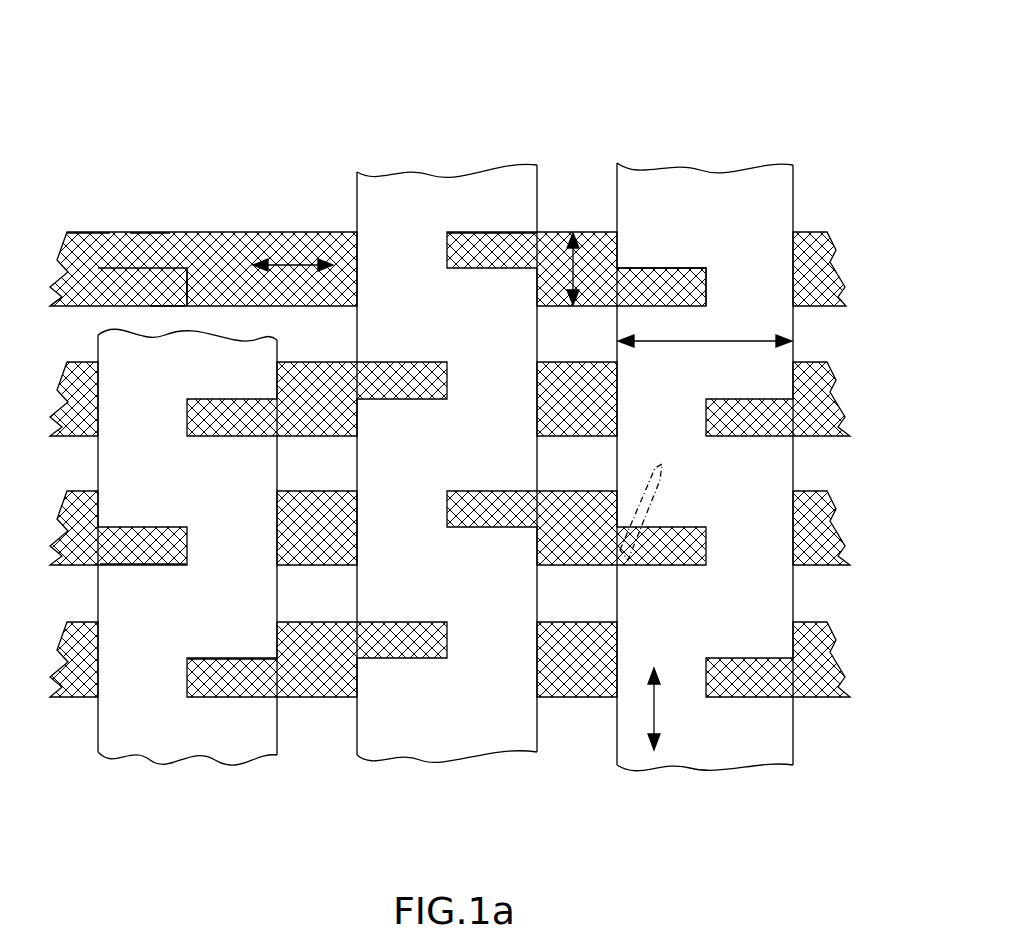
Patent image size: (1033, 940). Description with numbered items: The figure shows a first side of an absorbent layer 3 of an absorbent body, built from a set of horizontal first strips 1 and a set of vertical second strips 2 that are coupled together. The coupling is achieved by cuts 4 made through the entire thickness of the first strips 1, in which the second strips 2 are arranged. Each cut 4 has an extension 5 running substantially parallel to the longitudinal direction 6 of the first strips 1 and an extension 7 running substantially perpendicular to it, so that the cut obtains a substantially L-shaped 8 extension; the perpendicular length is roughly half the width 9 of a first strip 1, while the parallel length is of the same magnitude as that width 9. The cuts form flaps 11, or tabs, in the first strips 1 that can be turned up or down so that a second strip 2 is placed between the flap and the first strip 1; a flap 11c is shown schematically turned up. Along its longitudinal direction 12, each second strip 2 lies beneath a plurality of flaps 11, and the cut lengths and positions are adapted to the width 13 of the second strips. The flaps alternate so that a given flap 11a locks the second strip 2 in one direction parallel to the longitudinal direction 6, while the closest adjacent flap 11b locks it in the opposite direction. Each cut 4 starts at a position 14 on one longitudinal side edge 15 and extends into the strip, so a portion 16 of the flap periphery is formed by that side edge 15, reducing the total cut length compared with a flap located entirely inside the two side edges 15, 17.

The first strips 1 is at (806, 245).
The second strips 2 is at (180, 735).
The absorbent layer 3 is at (684, 98).
The cuts 4 is at (660, 268).
The extension of cut in longitudinal direction 5 is at (150, 262).
The longitudinal direction of first strips 6 is at (276, 262).
The extension of cut in perpendicular direction 7 is at (198, 283).
The L-shaped extension 8 is at (130, 300).
The width of first strip 9 is at (580, 258).
The flaps 11 is at (483, 242).
The flap 11a is at (116, 557).
The adjacent flap 11b is at (220, 666).
The turned-up flap 11c is at (660, 485).
The longitudinal direction of second strip 12 is at (650, 712).
The width of second strips 13 is at (718, 342).
The position 14 is at (188, 304).
The longitudinal side edge 15 is at (70, 306).
The portion of flap periphery 16 is at (172, 306).
The other side edge 17 is at (92, 232).